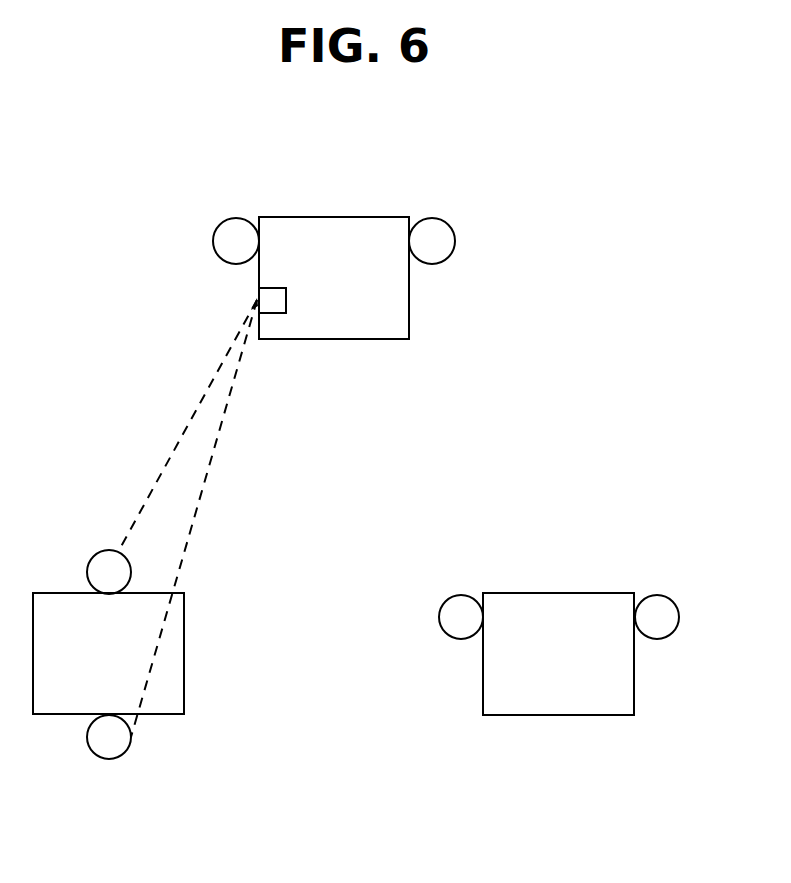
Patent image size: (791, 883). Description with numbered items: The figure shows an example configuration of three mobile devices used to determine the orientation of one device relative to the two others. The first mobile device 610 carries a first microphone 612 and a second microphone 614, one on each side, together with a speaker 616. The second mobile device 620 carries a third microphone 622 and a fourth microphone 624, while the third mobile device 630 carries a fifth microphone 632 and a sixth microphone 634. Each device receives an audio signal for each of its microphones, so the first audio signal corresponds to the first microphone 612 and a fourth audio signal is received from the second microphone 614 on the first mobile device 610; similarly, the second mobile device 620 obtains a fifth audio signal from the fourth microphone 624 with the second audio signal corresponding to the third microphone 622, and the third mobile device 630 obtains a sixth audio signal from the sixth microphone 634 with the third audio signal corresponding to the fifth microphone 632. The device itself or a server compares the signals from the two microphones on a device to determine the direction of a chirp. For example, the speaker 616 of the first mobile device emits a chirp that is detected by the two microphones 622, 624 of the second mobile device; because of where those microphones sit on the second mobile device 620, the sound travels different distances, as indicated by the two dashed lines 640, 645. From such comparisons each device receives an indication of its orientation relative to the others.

The first mobile device 610 is at (334, 278).
The first microphone 612 is at (216, 241).
The second microphone 614 is at (452, 241).
The speaker 616 is at (272, 313).
The second mobile device 620 is at (108, 653).
The third microphone 622 is at (88, 572).
The fourth microphone 624 is at (88, 737).
The third mobile device 630 is at (558, 654).
The fifth microphone 632 is at (440, 617).
The sixth microphone 634 is at (678, 617).
The dashed line 640 is at (188, 425).
The dashed line 645 is at (194, 518).